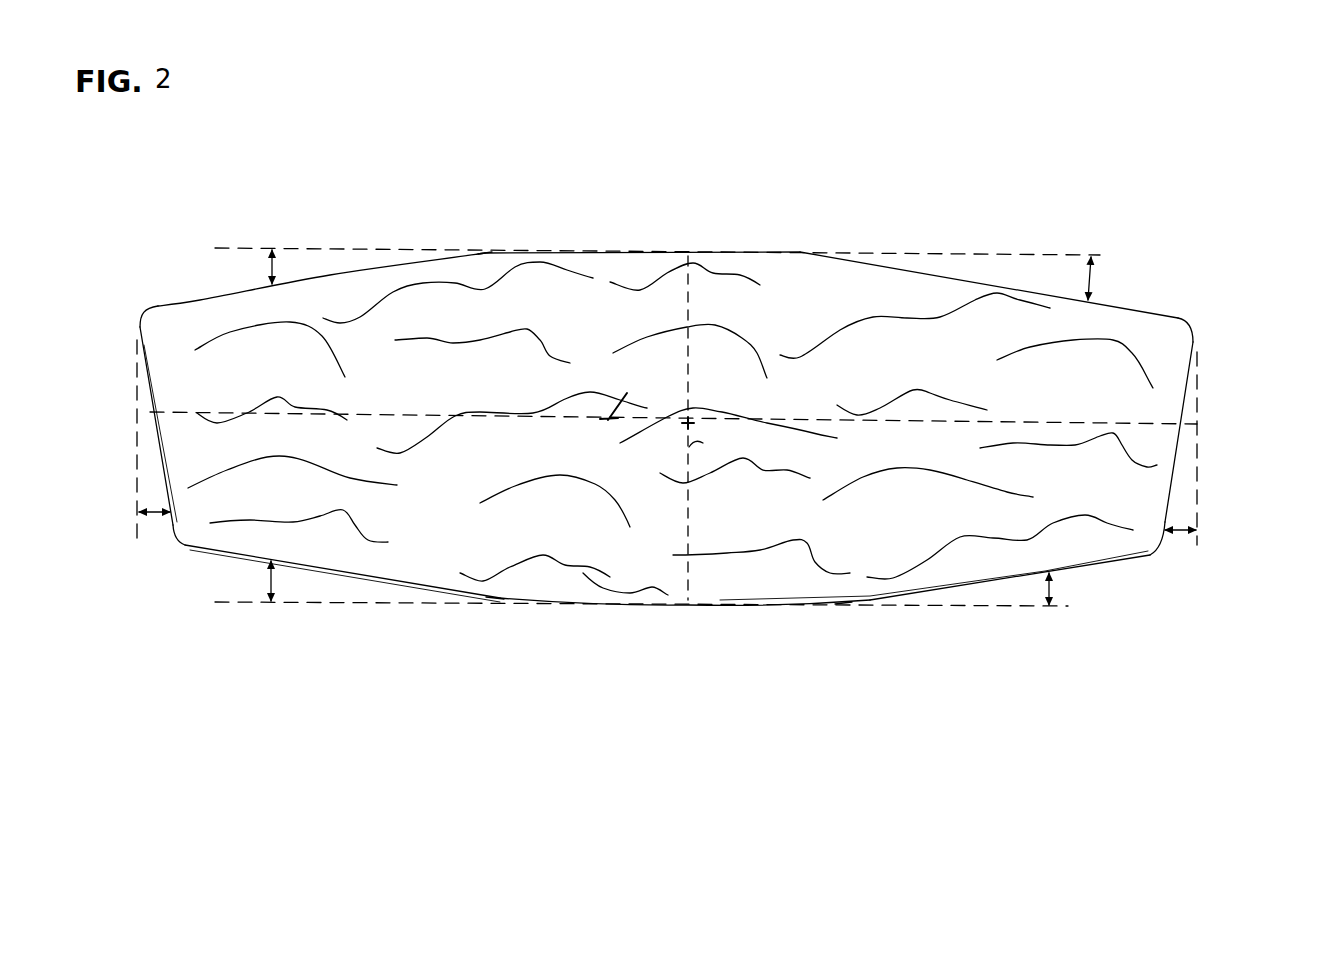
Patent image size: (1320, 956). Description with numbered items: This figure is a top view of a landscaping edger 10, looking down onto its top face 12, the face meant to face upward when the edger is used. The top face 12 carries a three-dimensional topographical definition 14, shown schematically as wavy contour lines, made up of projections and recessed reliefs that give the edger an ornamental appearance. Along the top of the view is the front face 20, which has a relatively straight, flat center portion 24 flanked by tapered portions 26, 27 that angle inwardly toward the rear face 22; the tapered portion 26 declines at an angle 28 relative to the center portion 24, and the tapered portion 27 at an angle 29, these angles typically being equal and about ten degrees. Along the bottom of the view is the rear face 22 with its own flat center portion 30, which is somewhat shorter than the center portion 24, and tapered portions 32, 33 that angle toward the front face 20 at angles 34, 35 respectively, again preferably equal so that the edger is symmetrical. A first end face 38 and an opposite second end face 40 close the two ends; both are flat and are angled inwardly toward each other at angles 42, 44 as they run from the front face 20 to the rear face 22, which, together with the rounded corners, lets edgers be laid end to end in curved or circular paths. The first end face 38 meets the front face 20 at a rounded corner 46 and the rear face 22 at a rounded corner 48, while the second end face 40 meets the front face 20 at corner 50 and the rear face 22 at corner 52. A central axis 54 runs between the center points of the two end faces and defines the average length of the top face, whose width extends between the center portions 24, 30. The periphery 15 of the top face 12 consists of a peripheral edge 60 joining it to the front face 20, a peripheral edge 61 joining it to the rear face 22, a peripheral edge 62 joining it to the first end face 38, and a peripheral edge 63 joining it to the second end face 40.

The landscaping edger 10 is at (447, 176).
The top face 12 is at (727, 515).
The three-dimensional topographical definition 14 is at (808, 273).
The periphery 15 is at (495, 600).
The front face 20 is at (740, 252).
The rear face 22 is at (716, 604).
The center portion 24 is at (650, 252).
The tapered portion 26 is at (333, 274).
The tapered portion 27 is at (1012, 290).
The angle 28 is at (263, 275).
The angle 29 is at (1095, 285).
The center portion 30 is at (627, 603).
The tapered portion 32 is at (353, 580).
The tapered portion 33 is at (961, 585).
The angle 34 is at (268, 580).
The angle 35 is at (1052, 590).
The first end face 38 is at (150, 429).
The second end face 40 is at (1180, 428).
The angle 42 is at (145, 518).
The angle 44 is at (1183, 535).
The corner 46 is at (143, 318).
The corner 48 is at (182, 538).
The corner 50 is at (1190, 345).
The corner 52 is at (1150, 533).
The central axis 54 is at (812, 418).
The peripheral edge 60 is at (487, 252).
The peripheral edge 61 is at (843, 604).
The peripheral edge 62 is at (167, 448).
The peripheral edge 63 is at (1183, 403).